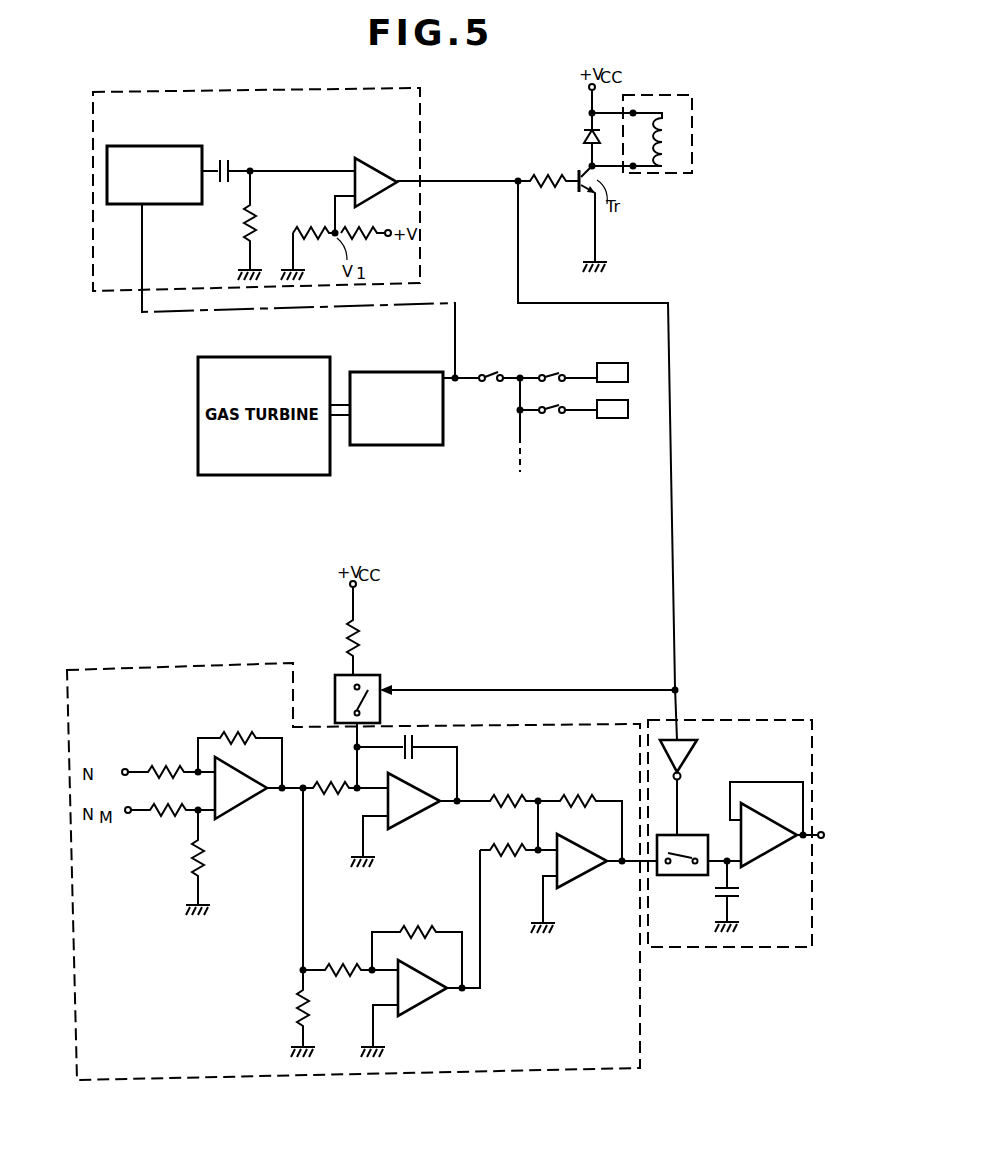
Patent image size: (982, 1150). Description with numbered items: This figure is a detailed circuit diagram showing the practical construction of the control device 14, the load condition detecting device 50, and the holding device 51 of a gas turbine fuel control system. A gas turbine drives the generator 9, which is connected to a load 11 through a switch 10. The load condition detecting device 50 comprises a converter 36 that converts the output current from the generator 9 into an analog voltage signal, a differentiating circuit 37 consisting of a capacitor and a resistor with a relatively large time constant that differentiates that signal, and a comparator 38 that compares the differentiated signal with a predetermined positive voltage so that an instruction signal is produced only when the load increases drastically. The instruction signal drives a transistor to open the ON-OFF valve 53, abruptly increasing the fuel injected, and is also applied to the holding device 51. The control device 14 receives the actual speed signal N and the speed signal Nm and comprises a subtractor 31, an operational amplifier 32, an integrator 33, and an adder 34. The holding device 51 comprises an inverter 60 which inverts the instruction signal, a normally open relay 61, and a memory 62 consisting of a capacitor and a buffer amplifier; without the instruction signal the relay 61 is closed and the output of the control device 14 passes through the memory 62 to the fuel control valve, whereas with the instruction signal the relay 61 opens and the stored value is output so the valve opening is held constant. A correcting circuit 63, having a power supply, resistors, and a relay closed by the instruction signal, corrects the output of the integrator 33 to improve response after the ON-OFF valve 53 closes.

The generator 9 is at (418, 446).
The switch 10 is at (493, 372).
The load 11 is at (630, 374).
The control device 14 is at (224, 1082).
The subtractor 31 is at (245, 800).
The operational amplifier 32 is at (430, 1002).
The integrator 33 is at (418, 816).
The adder 34 is at (585, 880).
The converter 36 is at (152, 146).
The differentiating circuit 37 is at (227, 158).
The comparator 38 is at (378, 165).
The load condition detecting device 50 is at (420, 117).
The holding device 51 is at (745, 716).
The ON-OFF valve 53 is at (692, 133).
The inverter 60 is at (688, 760).
The relay 61 is at (683, 877).
The memory 62 is at (768, 855).
The correcting circuit 63 is at (376, 669).